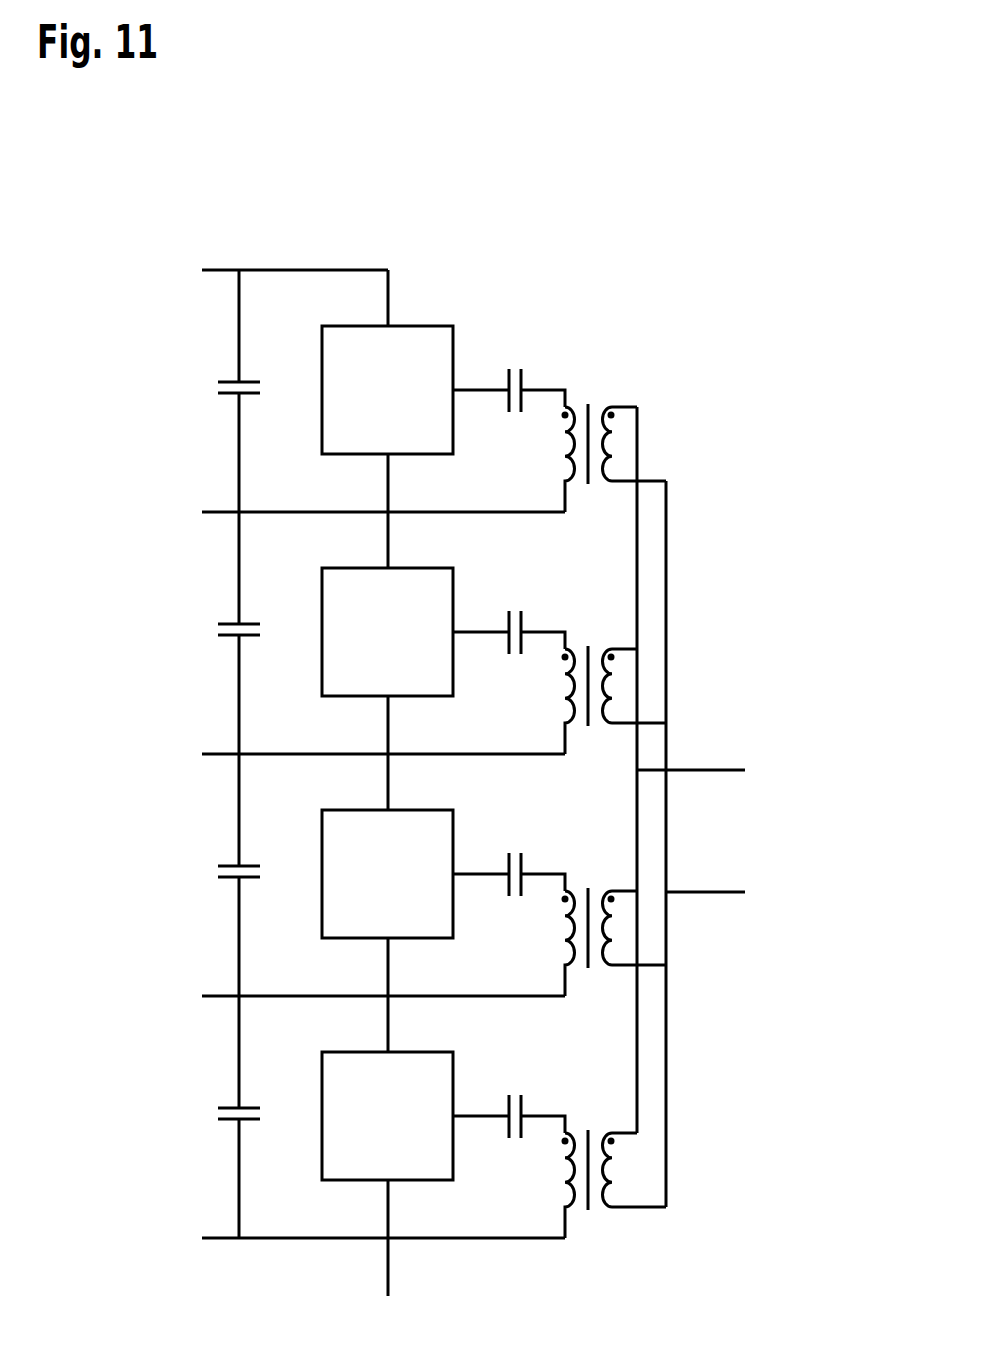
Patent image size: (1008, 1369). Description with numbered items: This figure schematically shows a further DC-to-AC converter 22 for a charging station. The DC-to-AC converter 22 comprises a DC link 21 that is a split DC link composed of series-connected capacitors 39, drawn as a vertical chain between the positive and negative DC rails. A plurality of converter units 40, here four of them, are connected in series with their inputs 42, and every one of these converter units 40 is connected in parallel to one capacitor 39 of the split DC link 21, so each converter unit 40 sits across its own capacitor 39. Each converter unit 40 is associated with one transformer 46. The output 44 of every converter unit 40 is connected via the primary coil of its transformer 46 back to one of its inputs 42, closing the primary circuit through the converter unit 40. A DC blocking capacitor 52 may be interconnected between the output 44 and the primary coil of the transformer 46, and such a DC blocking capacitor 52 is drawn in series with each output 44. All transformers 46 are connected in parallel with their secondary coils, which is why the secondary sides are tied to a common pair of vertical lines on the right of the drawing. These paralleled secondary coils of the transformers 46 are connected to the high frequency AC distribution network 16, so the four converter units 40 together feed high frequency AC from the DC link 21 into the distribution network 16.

The high frequency AC distribution network 16 is at (822, 608).
The DC link 21 is at (195, 224).
The DC-to-AC converter 22 is at (746, 215).
The capacitor 39 is at (225, 381).
The converter unit 40 is at (322, 433).
The input 42 is at (388, 297).
The output 44 is at (480, 390).
The transformer 46 is at (597, 390).
The DC blocking capacitor 52 is at (527, 386).